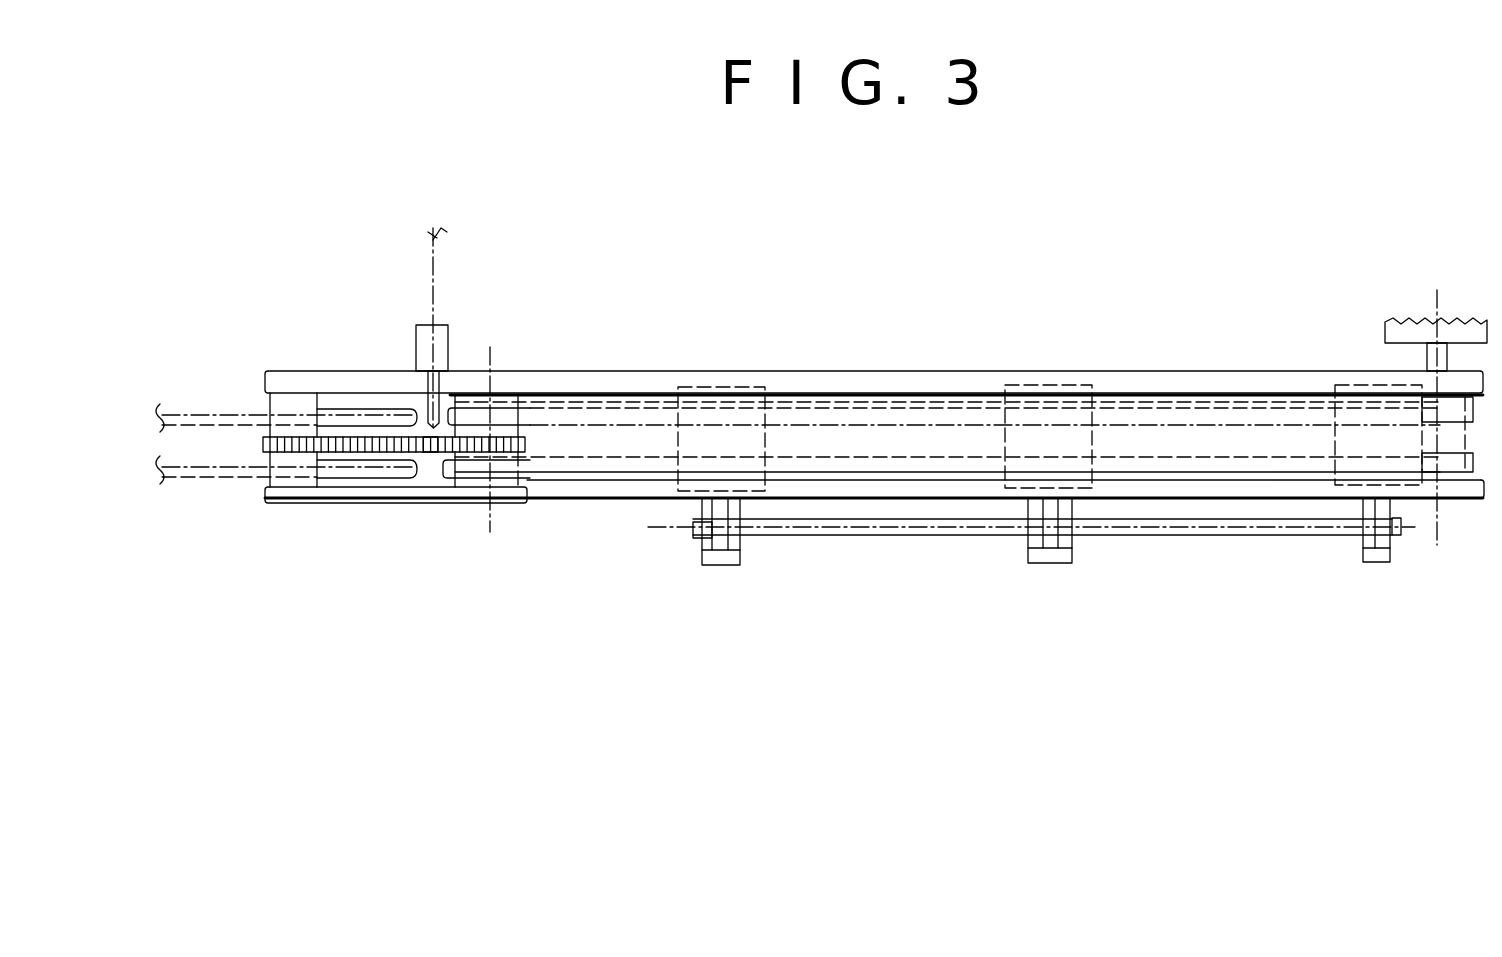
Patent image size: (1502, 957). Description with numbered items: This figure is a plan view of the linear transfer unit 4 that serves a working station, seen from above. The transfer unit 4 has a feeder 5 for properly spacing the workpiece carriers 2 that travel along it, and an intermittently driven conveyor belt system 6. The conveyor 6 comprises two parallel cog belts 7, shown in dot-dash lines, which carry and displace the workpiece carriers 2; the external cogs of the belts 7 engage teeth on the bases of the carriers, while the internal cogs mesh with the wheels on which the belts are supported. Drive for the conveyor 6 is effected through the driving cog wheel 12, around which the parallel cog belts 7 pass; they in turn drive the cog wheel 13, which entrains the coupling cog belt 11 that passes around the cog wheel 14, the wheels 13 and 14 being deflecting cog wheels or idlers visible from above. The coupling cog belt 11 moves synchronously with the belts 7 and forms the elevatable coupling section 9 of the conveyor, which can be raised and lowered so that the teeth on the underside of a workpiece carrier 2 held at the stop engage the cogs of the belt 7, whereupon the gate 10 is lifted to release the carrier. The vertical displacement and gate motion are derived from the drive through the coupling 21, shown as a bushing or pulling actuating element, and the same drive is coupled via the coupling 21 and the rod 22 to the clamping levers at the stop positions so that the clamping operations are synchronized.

The workpiece carrier 2 is at (718, 387).
The linear transfer unit 4 is at (1287, 230).
The feeder 5 is at (186, 492).
The conveyor belt system 6 is at (570, 482).
The cog belt 7 is at (618, 412).
The coupling section 9 is at (368, 462).
The gate 10 is at (442, 395).
The coupling cog belt 11 is at (432, 452).
The driving cog wheel 12 is at (1450, 442).
The cog wheel 13 is at (518, 420).
The cog wheel 14 is at (268, 458).
The coupling 21 is at (435, 257).
The rod 22 is at (872, 538).